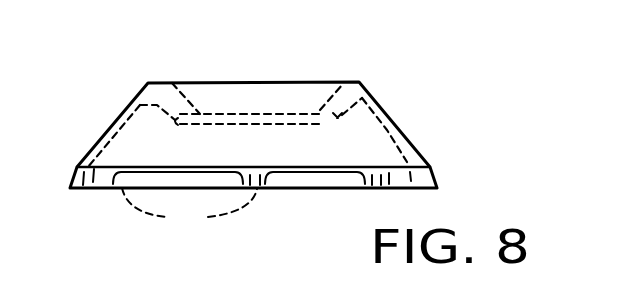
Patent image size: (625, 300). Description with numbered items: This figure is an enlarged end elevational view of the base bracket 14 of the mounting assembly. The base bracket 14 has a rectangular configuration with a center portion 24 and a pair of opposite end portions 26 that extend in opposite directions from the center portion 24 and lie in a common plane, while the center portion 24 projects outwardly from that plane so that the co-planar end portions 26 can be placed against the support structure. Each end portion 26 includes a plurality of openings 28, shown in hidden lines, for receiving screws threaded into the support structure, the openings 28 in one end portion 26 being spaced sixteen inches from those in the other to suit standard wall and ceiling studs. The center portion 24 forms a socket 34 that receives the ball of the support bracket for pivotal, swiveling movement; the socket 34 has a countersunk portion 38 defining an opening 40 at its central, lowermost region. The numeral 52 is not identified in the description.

The base bracket 14 is at (388, 89).
The center portion 24 is at (392, 127).
The opposite end portions 26 is at (85, 190).
The openings 28 is at (372, 190).
The socket 34 is at (305, 111).
The countersunk portion 38 is at (177, 84).
The opening 40 is at (200, 114).
The connector 52 is at (620, 12).